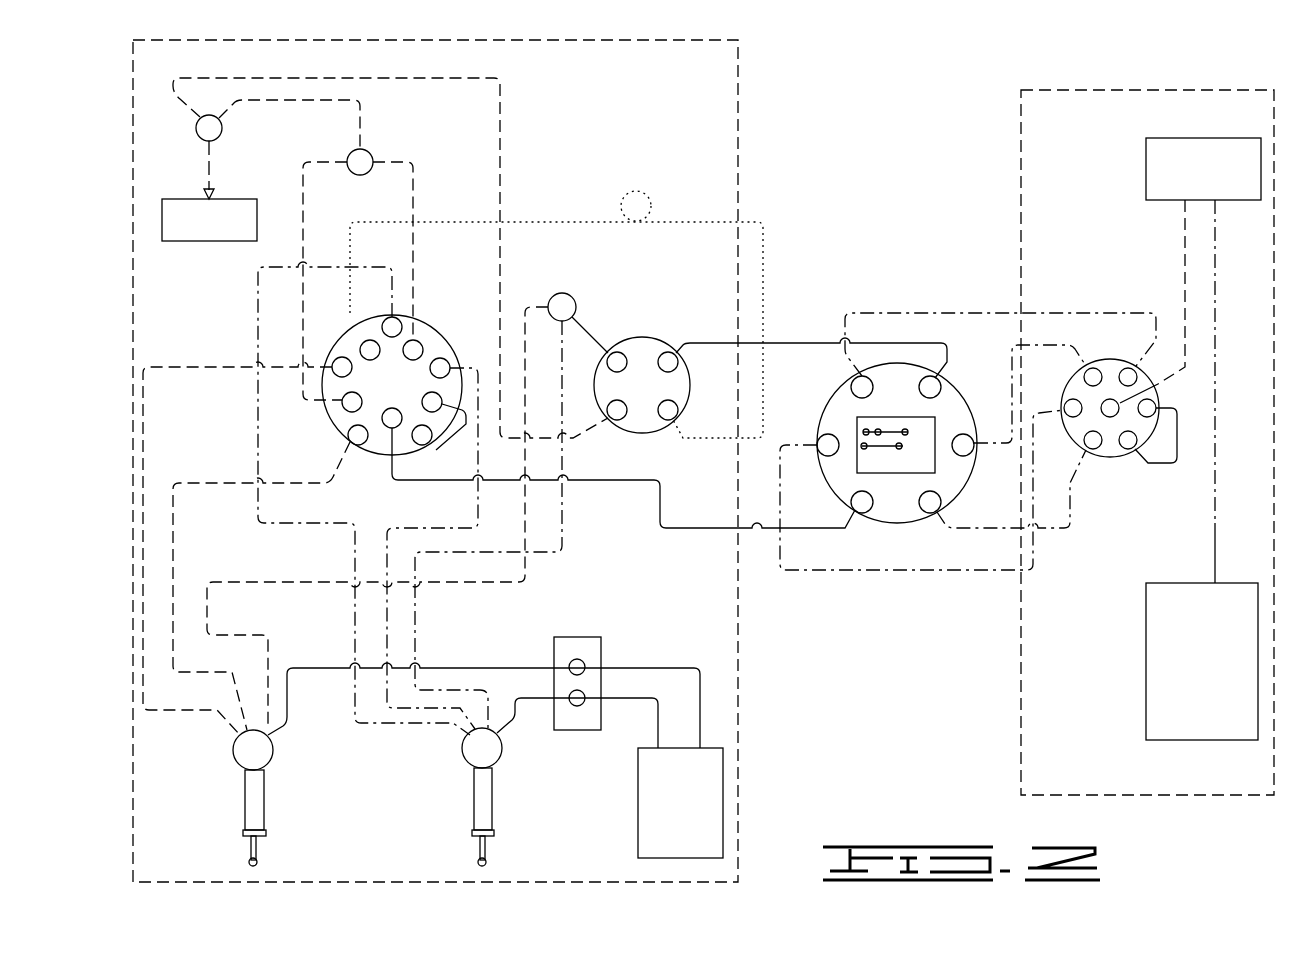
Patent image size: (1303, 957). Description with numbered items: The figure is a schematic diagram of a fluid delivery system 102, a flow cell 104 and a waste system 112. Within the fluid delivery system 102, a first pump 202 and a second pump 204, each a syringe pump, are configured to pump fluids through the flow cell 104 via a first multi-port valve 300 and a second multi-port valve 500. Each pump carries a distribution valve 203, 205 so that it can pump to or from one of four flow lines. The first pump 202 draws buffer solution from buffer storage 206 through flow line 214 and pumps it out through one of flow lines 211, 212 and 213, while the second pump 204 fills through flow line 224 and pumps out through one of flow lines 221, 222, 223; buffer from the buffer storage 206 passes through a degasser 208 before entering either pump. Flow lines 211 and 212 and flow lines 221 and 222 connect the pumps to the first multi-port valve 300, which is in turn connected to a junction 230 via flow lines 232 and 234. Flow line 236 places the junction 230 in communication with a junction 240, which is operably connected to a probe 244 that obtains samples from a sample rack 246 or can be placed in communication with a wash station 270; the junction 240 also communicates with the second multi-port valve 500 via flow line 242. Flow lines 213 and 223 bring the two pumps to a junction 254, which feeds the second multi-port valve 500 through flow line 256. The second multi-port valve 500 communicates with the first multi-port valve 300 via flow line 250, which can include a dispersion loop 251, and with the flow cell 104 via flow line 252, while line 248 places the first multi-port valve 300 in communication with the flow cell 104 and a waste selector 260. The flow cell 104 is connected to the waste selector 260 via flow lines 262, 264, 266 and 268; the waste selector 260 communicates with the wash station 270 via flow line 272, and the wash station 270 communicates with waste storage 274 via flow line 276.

The fluid delivery system 102 is at (740, 87).
The waste system 112 is at (1172, 90).
The flow cell 104 is at (890, 527).
The first pump 202 is at (243, 810).
The distribution valve 203 is at (232, 757).
The second pump 204 is at (470, 810).
The distribution valve 205 is at (462, 762).
The buffer storage 206 is at (638, 835).
The degasser 208 is at (580, 637).
The flow line 211 is at (188, 365).
The flow line 212 is at (207, 480).
The flow line 213 is at (262, 580).
The flow line 214 is at (288, 737).
The flow line 221 is at (353, 616).
The flow line 222 is at (413, 527).
The flow line 223 is at (418, 637).
The flow line 224 is at (533, 700).
The junction 230 is at (372, 152).
The flow line 232 is at (305, 195).
The flow line 234 is at (415, 195).
The flow line 236 is at (296, 102).
The junction 240 is at (198, 138).
The flow line 242 is at (502, 140).
The probe 244 is at (212, 165).
The sample rack 246 is at (198, 243).
The line 248 is at (613, 483).
The flow line 250 is at (765, 238).
The dispersion loop 251 is at (643, 193).
The flow line 252 is at (800, 338).
The junction 254 is at (570, 295).
The flow line 256 is at (620, 348).
The waste selector 260 is at (1108, 460).
The flow line 262 is at (1068, 532).
The flow line 264 is at (905, 575).
The flow line 266 is at (1048, 340).
The flow line 268 is at (968, 312).
The wash station 270 is at (1146, 165).
The flow line 272 is at (1183, 250).
The waste storage 274 is at (1146, 668).
The flow line 276 is at (1212, 525).
The first multi-port valve 300 is at (452, 325).
The second multi-port valve 500 is at (650, 432).